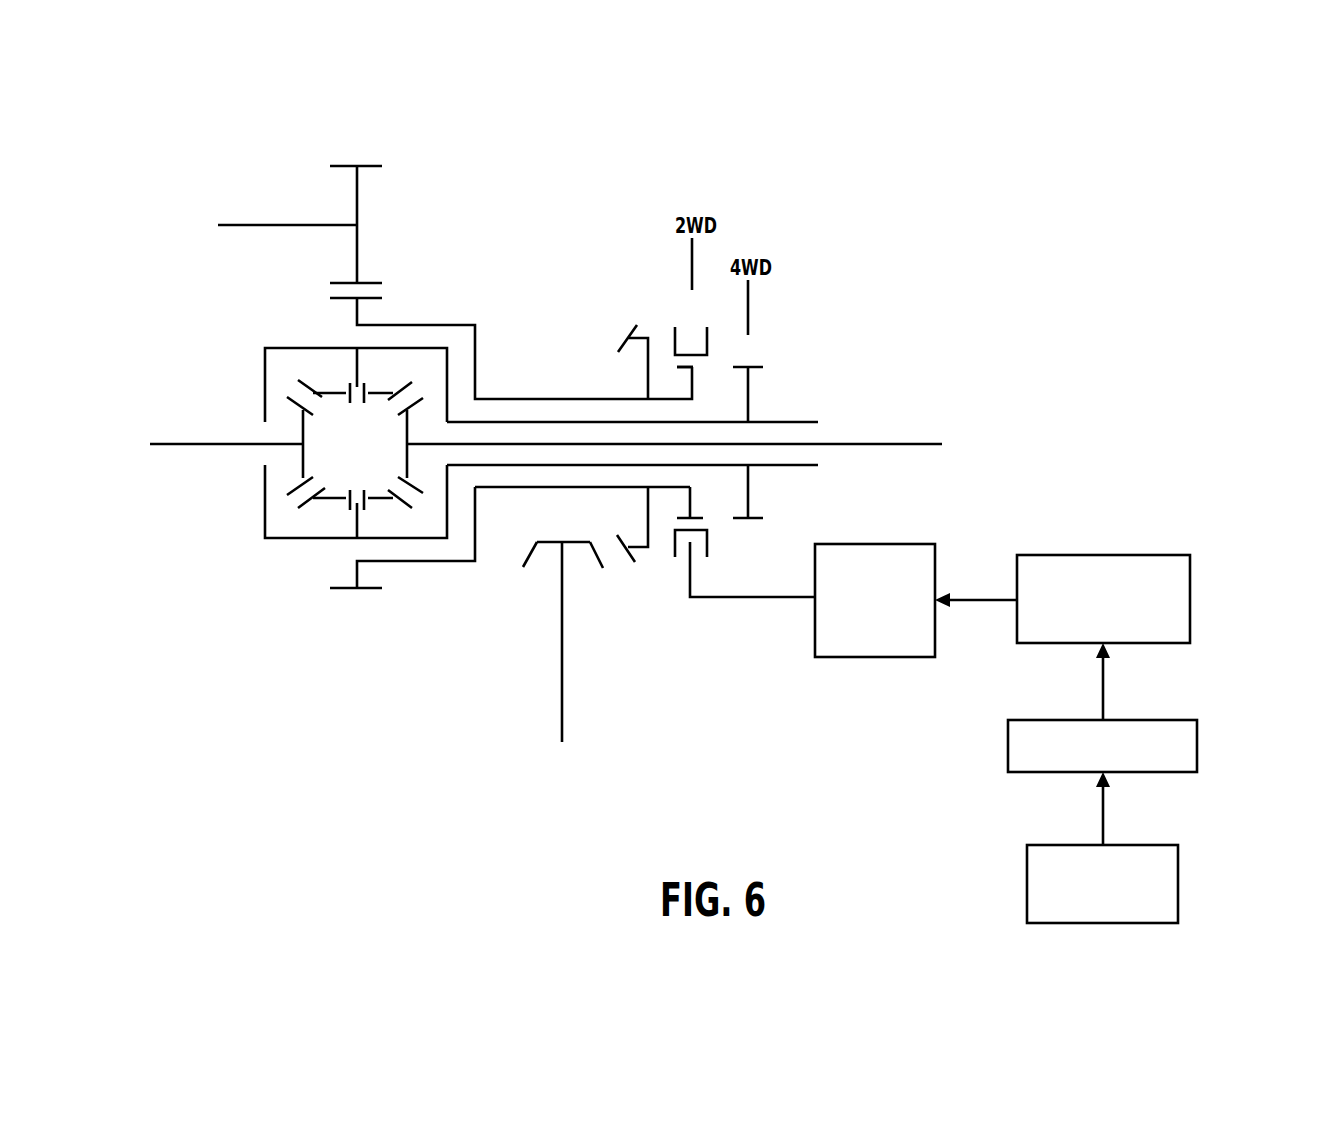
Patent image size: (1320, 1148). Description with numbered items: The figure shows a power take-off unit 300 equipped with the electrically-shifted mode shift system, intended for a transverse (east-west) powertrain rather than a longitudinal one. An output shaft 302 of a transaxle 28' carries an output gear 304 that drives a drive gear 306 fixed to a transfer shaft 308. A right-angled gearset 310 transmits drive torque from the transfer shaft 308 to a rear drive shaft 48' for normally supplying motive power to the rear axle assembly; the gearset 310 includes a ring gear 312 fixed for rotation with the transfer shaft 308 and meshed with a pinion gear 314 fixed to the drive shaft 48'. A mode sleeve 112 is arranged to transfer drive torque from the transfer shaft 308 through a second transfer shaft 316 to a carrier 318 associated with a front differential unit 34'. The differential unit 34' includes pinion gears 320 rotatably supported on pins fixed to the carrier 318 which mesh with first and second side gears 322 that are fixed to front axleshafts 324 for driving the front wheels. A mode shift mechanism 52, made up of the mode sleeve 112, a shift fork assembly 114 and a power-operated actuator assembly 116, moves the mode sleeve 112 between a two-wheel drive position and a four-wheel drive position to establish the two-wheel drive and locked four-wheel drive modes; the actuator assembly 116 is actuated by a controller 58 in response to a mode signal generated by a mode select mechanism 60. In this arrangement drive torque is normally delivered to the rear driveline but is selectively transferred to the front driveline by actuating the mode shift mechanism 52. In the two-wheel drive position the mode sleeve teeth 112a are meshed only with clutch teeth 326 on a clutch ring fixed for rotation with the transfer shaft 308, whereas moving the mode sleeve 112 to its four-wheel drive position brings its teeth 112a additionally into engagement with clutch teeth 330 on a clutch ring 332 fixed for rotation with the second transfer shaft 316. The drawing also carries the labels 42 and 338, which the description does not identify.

The transaxle 28' is at (511, 260).
The power take-off unit 300 is at (820, 210).
The output shaft 302 is at (245, 223).
The output gear 304 is at (343, 165).
The drive gear 306 is at (368, 592).
The transfer shaft 308 is at (570, 487).
The right-angled gearset 310 is at (632, 587).
The ring gear 312 is at (628, 328).
The pinion gear 314 is at (557, 540).
The second transfer shaft 316 is at (508, 420).
The carrier 318 is at (307, 347).
The pinion gears 320 is at (367, 384).
The side gears 322 is at (407, 462).
The front axleshafts 324 is at (190, 442).
The clutch teeth 326 is at (700, 363).
The clutch teeth 330 is at (753, 367).
The clutch ring 332 is at (748, 497).
The clutch teeth 338 is at (692, 510).
The front differential unit 34' is at (221, 596).
The shaft 42 is at (572, 444).
The rear drive shaft 48' is at (591, 675).
The mode shift mechanism 52 is at (988, 545).
The controller 58 is at (1185, 743).
The mode select mechanism 60 is at (1170, 887).
The mode sleeve 112 is at (707, 342).
The mode sleeve teeth 112a is at (700, 530).
The shift fork assembly 114 is at (835, 647).
The actuator assembly 116 is at (1177, 590).